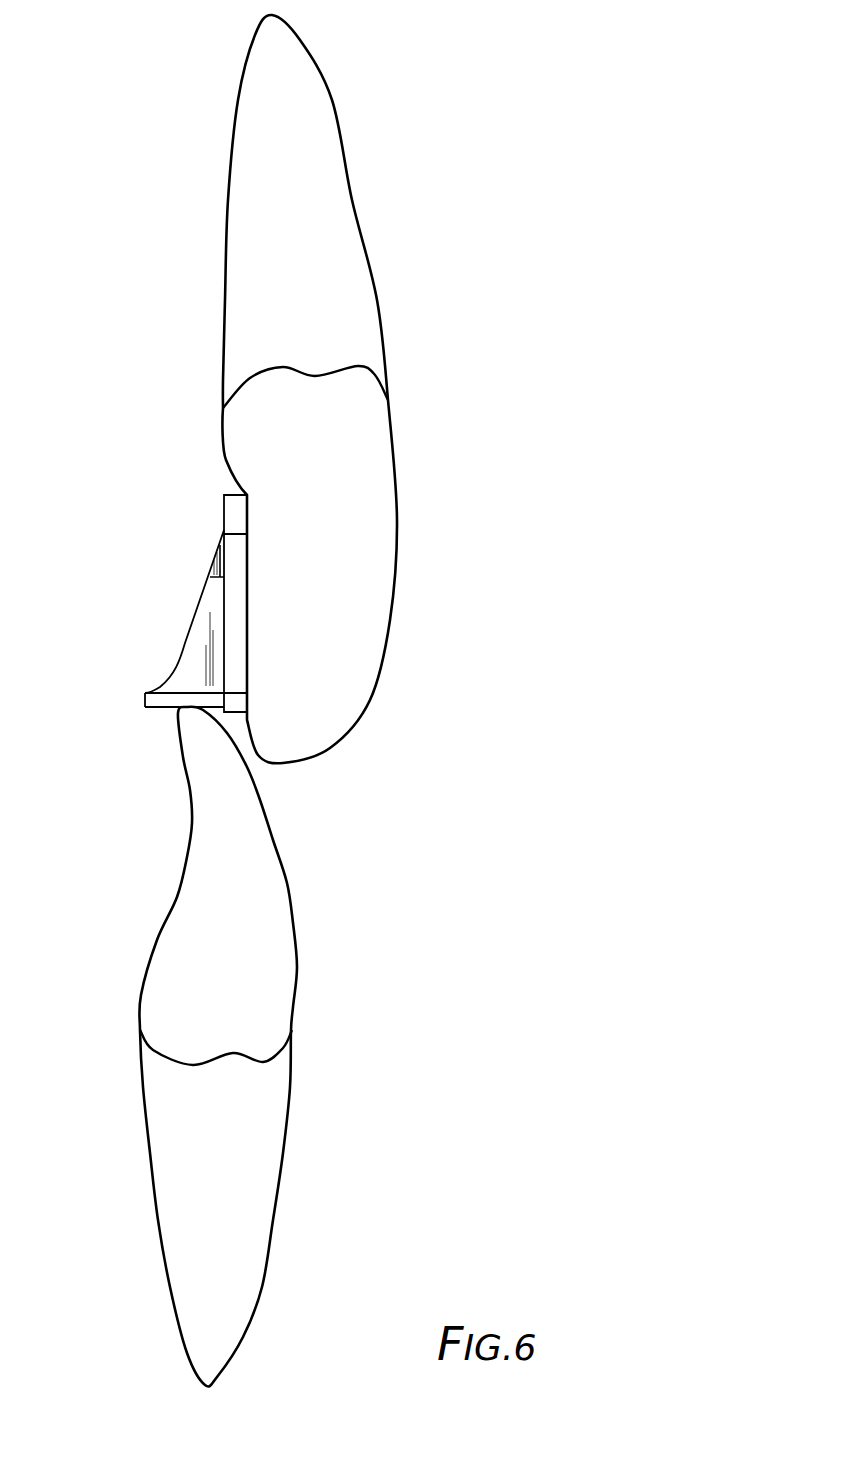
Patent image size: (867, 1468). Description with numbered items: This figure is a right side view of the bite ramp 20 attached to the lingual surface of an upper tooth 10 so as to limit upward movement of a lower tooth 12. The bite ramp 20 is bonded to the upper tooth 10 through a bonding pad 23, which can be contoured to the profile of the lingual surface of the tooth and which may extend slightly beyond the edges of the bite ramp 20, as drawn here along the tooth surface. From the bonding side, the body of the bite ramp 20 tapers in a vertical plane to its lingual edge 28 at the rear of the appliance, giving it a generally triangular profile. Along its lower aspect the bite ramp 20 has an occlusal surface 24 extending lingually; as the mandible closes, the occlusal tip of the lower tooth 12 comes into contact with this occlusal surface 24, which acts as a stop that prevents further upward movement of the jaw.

The upper tooth 10 is at (400, 455).
The lower tooth 12 is at (290, 892).
The bite ramp 20 is at (185, 589).
The bonding pad 23 is at (235, 513).
The occlusal surface 24 is at (160, 708).
The lingual edge 28 is at (143, 698).